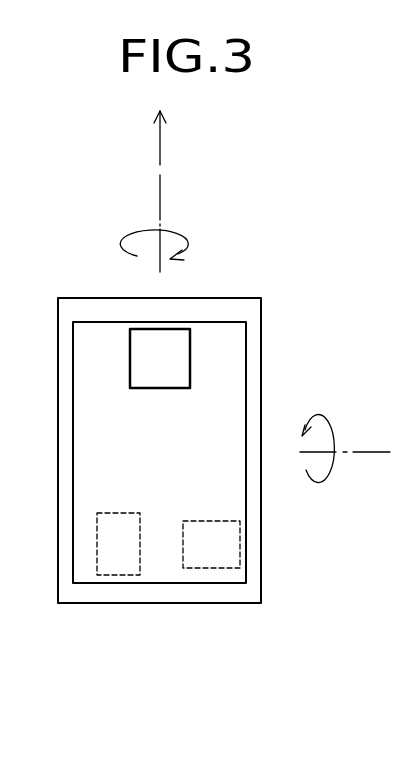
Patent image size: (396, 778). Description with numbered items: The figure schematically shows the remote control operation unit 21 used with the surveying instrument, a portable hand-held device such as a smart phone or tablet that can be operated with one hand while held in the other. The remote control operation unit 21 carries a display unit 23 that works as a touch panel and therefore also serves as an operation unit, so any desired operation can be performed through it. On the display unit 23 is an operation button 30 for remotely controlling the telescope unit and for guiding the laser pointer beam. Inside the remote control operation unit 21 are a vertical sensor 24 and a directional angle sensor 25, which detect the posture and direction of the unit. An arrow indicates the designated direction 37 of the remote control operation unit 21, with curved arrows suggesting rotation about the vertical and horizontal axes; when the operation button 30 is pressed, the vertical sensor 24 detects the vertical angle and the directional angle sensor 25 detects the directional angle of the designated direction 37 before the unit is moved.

The remote control operation unit 21 is at (262, 313).
The display unit 23 is at (210, 385).
The vertical sensor 24 is at (205, 521).
The directional angle sensor 25 is at (112, 575).
The operation button 30 is at (130, 370).
The designated direction 37 is at (160, 138).